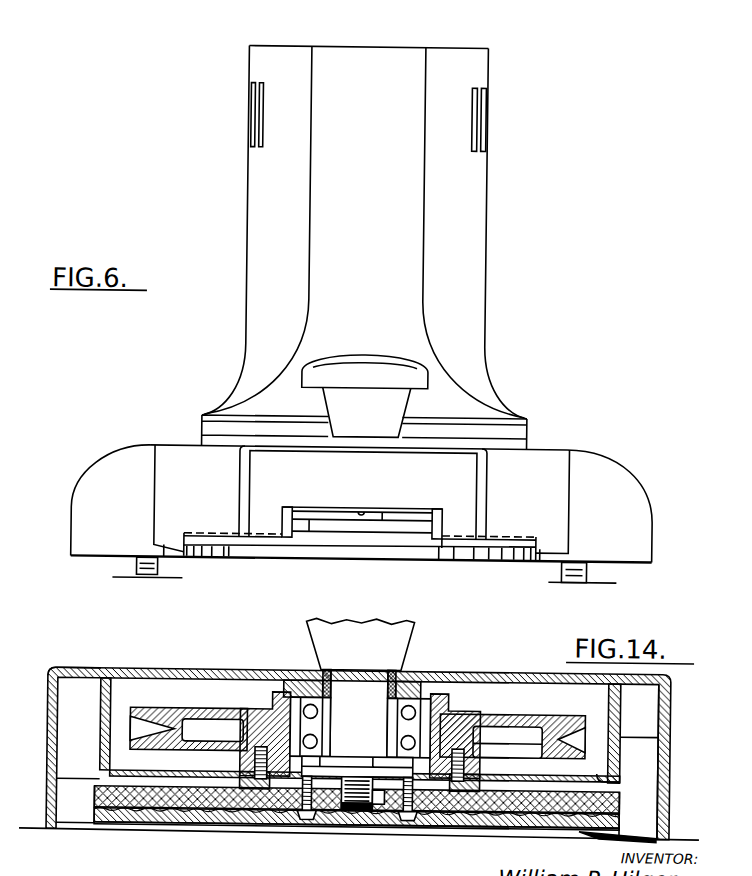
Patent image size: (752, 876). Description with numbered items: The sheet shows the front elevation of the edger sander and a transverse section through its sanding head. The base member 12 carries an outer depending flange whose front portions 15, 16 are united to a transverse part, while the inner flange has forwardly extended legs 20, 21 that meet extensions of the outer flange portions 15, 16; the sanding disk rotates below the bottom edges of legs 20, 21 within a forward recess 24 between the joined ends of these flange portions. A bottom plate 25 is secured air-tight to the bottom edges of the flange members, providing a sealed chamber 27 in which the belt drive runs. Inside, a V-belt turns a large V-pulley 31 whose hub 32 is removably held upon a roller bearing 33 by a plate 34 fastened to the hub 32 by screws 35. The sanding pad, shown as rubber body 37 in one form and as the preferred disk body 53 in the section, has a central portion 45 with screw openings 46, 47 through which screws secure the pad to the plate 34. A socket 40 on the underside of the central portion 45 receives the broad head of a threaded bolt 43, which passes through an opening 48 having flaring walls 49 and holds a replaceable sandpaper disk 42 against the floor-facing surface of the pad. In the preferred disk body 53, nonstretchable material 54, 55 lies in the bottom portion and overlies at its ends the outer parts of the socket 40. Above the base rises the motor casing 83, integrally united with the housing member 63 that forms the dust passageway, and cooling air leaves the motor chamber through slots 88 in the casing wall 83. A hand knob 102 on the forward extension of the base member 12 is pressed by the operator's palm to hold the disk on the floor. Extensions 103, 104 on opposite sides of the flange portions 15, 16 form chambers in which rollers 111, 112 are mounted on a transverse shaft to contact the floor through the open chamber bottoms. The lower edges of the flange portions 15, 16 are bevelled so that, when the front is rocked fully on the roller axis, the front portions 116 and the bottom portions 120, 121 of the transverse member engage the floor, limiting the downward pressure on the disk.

In FIG. 14, the base member 12 is at (170, 670).
In FIG. 6, the front flange portion 15 is at (240, 480).
In FIG. 14, the front flange portion 15 is at (47, 717).
In FIG. 6, the front flange portion 16 is at (482, 483).
In FIG. 14, the front flange portion 16 is at (670, 701).
In FIG. 14, the inner flange leg 20 is at (98, 693).
In FIG. 14, the inner flange leg 21 is at (620, 734).
In FIG. 6, the forward recess 24 is at (347, 518).
In FIG. 6, the bottom plate 25 is at (385, 513).
In FIG. 14, the bottom plate 25 is at (597, 771).
In FIG. 14, the sealed chamber 27 is at (133, 692).
In FIG. 14, the large V-pulley 31 is at (487, 713).
In FIG. 14, the pulley hub 32 is at (473, 740).
In FIG. 14, the roller bearing 33 is at (293, 706).
In FIG. 14, the plate 34 is at (428, 790).
In FIG. 14, the screws 35 is at (240, 815).
In FIG. 6, the rubber disk body 37 is at (442, 562).
In FIG. 14, the socket 40 is at (283, 819).
In FIG. 6, the sandpaper disk 42 is at (270, 560).
In FIG. 14, the sandpaper disk 42 is at (263, 824).
In FIG. 14, the threaded bolt 43 is at (372, 812).
In FIG. 14, the central portion 45 is at (350, 808).
In FIG. 14, the screw opening 46 is at (425, 793).
In FIG. 14, the screw opening 47 is at (308, 793).
In FIG. 14, the bolt opening 48 is at (362, 808).
In FIG. 14, the flaring walls 49 is at (341, 808).
In FIG. 14, the disk body 53 is at (100, 786).
In FIG. 14, the nonstretchable material 54 is at (157, 815).
In FIG. 14, the nonstretchable material 55 is at (205, 820).
In FIG. 6, the housing member 63 is at (418, 216).
In FIG. 6, the motor casing 83 is at (479, 244).
In FIG. 6, the slots 88 is at (253, 124).
In FIG. 6, the hand knob 102 is at (377, 360).
In FIG. 14, the hand knob 102 is at (405, 641).
In FIG. 6, the extension 103 is at (100, 474).
In FIG. 6, the extension 104 is at (637, 490).
In FIG. 6, the roller 111 is at (147, 580).
In FIG. 6, the roller 112 is at (577, 583).
In FIG. 6, the front portion 116 is at (167, 550).
In FIG. 6, the bottom portion 120 is at (460, 543).
In FIG. 14, the bottom portion 120 is at (77, 826).
In FIG. 6, the bottom portion 121 is at (228, 545).
In FIG. 14, the bottom portion 121 is at (628, 830).